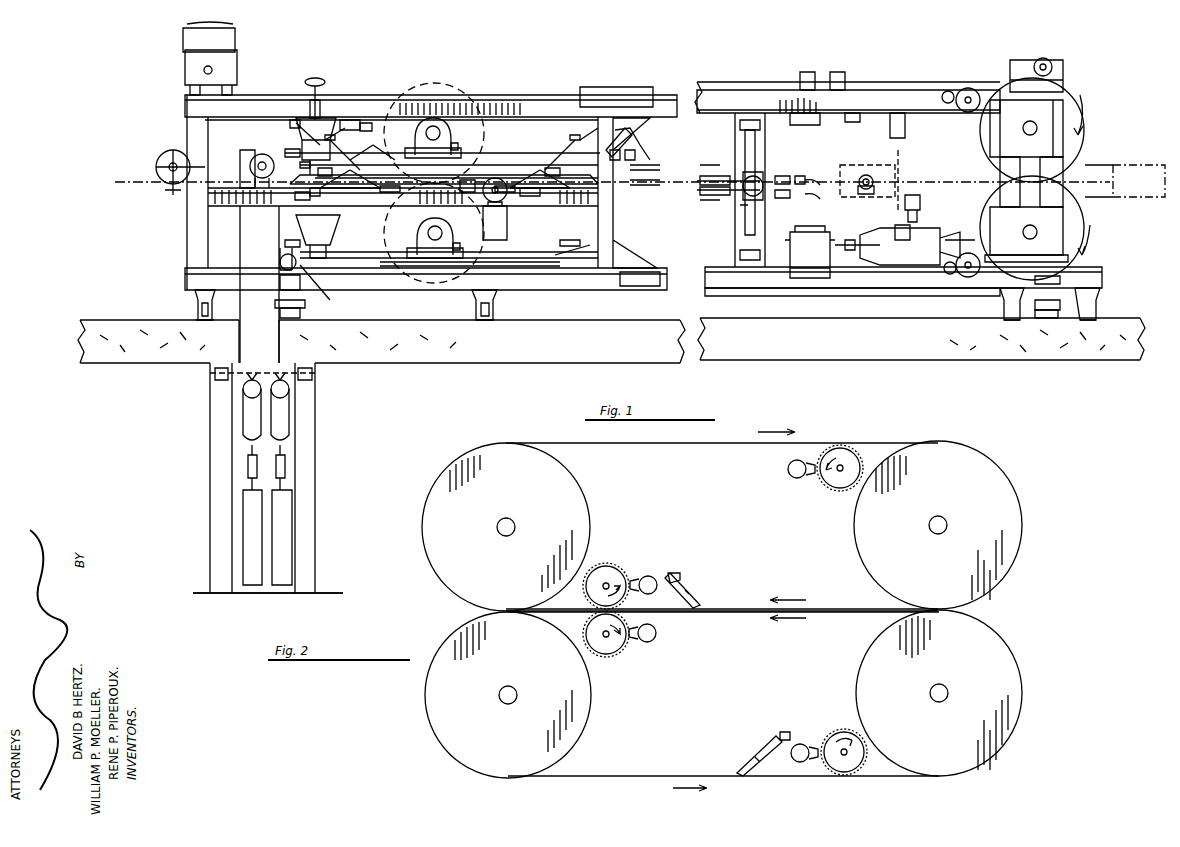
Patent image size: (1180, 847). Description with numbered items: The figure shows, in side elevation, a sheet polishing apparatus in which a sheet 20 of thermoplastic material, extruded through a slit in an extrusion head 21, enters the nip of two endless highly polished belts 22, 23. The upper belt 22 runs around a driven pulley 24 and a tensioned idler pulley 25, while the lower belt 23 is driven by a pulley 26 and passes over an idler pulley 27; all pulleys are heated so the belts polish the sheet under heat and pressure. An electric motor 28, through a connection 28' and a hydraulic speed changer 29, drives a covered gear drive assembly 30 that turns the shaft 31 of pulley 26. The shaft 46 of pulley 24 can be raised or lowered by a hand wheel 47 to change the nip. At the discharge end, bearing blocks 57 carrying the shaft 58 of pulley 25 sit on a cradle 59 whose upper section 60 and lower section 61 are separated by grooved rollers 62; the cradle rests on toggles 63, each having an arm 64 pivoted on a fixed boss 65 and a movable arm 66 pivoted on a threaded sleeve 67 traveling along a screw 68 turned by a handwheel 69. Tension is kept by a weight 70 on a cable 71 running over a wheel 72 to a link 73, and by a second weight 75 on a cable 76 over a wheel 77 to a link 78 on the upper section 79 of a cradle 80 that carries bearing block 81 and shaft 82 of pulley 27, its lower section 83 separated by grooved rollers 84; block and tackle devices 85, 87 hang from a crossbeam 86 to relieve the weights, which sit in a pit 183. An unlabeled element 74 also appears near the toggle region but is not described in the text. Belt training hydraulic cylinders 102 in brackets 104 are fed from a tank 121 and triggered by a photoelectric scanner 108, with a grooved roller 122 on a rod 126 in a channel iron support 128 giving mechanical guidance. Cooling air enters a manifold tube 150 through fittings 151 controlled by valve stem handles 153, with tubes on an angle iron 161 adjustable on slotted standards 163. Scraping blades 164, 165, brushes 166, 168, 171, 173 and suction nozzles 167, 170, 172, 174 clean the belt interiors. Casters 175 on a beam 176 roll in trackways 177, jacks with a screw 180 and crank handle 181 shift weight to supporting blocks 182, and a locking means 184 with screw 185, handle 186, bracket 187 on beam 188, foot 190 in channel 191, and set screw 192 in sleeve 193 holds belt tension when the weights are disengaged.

In FIG. 1, the sheet 20 is at (1080, 180).
In FIG. 1, the extrusion head 21 is at (1132, 197).
In FIG. 1, the upper belt 22 is at (740, 83).
In FIG. 2, the upper belt 22 is at (870, 443).
In FIG. 1, the lower belt 23 is at (700, 290).
In FIG. 2, the lower belt 23 is at (878, 775).
In FIG. 1, the driven pulley 24 is at (1075, 95).
In FIG. 2, the driven pulley 24 is at (978, 466).
In FIG. 1, the tensioned idler pulley 25 is at (448, 90).
In FIG. 2, the tensioned idler pulley 25 is at (436, 520).
In FIG. 1, the driven pulley 26 is at (1085, 212).
In FIG. 2, the driven pulley 26 is at (1000, 658).
In FIG. 1, the tensioned idler pulley 27 is at (390, 240).
In FIG. 2, the tensioned idler pulley 27 is at (450, 736).
In FIG. 1, the electric motor 28 is at (810, 244).
In FIG. 1, the connection 28' is at (857, 238).
In FIG. 1, the speed changer 29 is at (945, 232).
In FIG. 1, the gear drive assembly 30 is at (1000, 225).
In FIG. 1, the shaft 31 is at (1023, 238).
In FIG. 2, the shaft 31 is at (948, 693).
In FIG. 1, the shaft 46 is at (1037, 124).
In FIG. 2, the shaft 46 is at (947, 525).
In FIG. 1, the hand wheel 47 is at (1052, 58).
In FIG. 1, the bearing blocks 57 is at (455, 148).
In FIG. 1, the shaft 58 is at (426, 138).
In FIG. 2, the shaft 58 is at (514, 520).
In FIG. 1, the cradle 59 is at (296, 168).
In FIG. 1, the upper section 60 is at (372, 144).
In FIG. 1, the lower section 61 is at (392, 172).
In FIG. 1, the grooved rollers 62 is at (348, 158).
In FIG. 1, the toggles 63 is at (316, 181).
In FIG. 1, the arm 64 is at (445, 189).
In FIG. 1, the fixed boss 65 is at (398, 192).
In FIG. 1, the movable arm 66 is at (435, 169).
In FIG. 1, the internally threaded sleeve 67 is at (385, 188).
In FIG. 1, the rotatable screw 68 is at (245, 170).
In FIG. 1, the handwheel 69 is at (162, 157).
In FIG. 1, the weight 70 is at (253, 562).
In FIG. 1, the cable 71 is at (248, 450).
In FIG. 1, the wheel 72 is at (260, 155).
In FIG. 1, the link 73 is at (300, 150).
In FIG. 1, the block 74 is at (534, 198).
In FIG. 1, the weight 75 is at (282, 545).
In FIG. 1, the cable 76 is at (320, 450).
In FIG. 1, the wheel 77 is at (278, 248).
In FIG. 1, the link 78 is at (1052, 330).
In FIG. 1, the upper section 79 is at (345, 248).
In FIG. 1, the cradle 80 is at (560, 258).
In FIG. 1, the bearing block 81 is at (457, 246).
In FIG. 1, the shaft 82 is at (443, 226).
In FIG. 2, the shaft 82 is at (515, 688).
In FIG. 1, the lower section 83 is at (522, 265).
In FIG. 1, the grooved rollers 84 is at (560, 242).
In FIG. 1, the block and tackle 85 is at (240, 402).
In FIG. 1, the crossbeam 86 is at (245, 372).
In FIG. 1, the block and tackle 87 is at (292, 407).
In FIG. 1, the hydraulic cylinders 102 is at (895, 232).
In FIG. 1, the brackets 104 is at (288, 225).
In FIG. 1, the photoelectric scanner 108 is at (896, 208).
In FIG. 1, the tank 121 is at (190, 60).
In FIG. 1, the grooved roller 122 is at (880, 170).
In FIG. 1, the rod 126 is at (866, 172).
In FIG. 1, the channel iron support 128 is at (864, 195).
In FIG. 1, the manifold tube 150 is at (812, 203).
In FIG. 1, the fittings 151 is at (700, 198).
In FIG. 1, the valve stem handles 153 is at (708, 168).
In FIG. 1, the angle iron 161 is at (652, 200).
In FIG. 1, the slotted standards 163 is at (745, 210).
In FIG. 1, the scraping blade 164 is at (632, 140).
In FIG. 2, the scraping blade 164 is at (700, 595).
In FIG. 2, the scraping blade 165 is at (745, 765).
In FIG. 2, the rotating brush 166 is at (615, 572).
In FIG. 2, the suction nozzle 167 is at (655, 575).
In FIG. 1, the driven brush 168 is at (972, 278).
In FIG. 2, the driven brush 168 is at (845, 770).
In FIG. 1, the suction nozzle 170 is at (950, 275).
In FIG. 2, the suction nozzle 170 is at (797, 744).
In FIG. 1, the brush 171 is at (968, 112).
In FIG. 2, the brush 171 is at (840, 485).
In FIG. 1, the suction nozzle 172 is at (947, 104).
In FIG. 2, the suction nozzle 172 is at (788, 469).
In FIG. 1, the auxiliary brush 173 is at (510, 200).
In FIG. 2, the auxiliary brush 173 is at (606, 650).
In FIG. 2, the suction nozzle 174 is at (657, 633).
In FIG. 1, the casters 175 is at (1108, 300).
In FIG. 1, the beam 176 is at (1125, 277).
In FIG. 1, the trackways 177 is at (1092, 330).
In FIG. 1, the screw 180 is at (280, 262).
In FIG. 1, the crank handle 181 is at (1070, 280).
In FIG. 1, the supporting blocks 182 is at (1045, 325).
In FIG. 1, the pit 183 is at (243, 590).
In FIG. 1, the locking means 184 is at (288, 124).
In FIG. 1, the screw 185 is at (312, 100).
In FIG. 1, the handle 186 is at (320, 80).
In FIG. 1, the bracket 187 is at (328, 125).
In FIG. 1, the beam 188 is at (258, 97).
In FIG. 1, the foot 190 is at (301, 132).
In FIG. 1, the channel 191 is at (466, 130).
In FIG. 1, the set screw 192 is at (362, 122).
In FIG. 1, the sleeve 193 is at (374, 128).